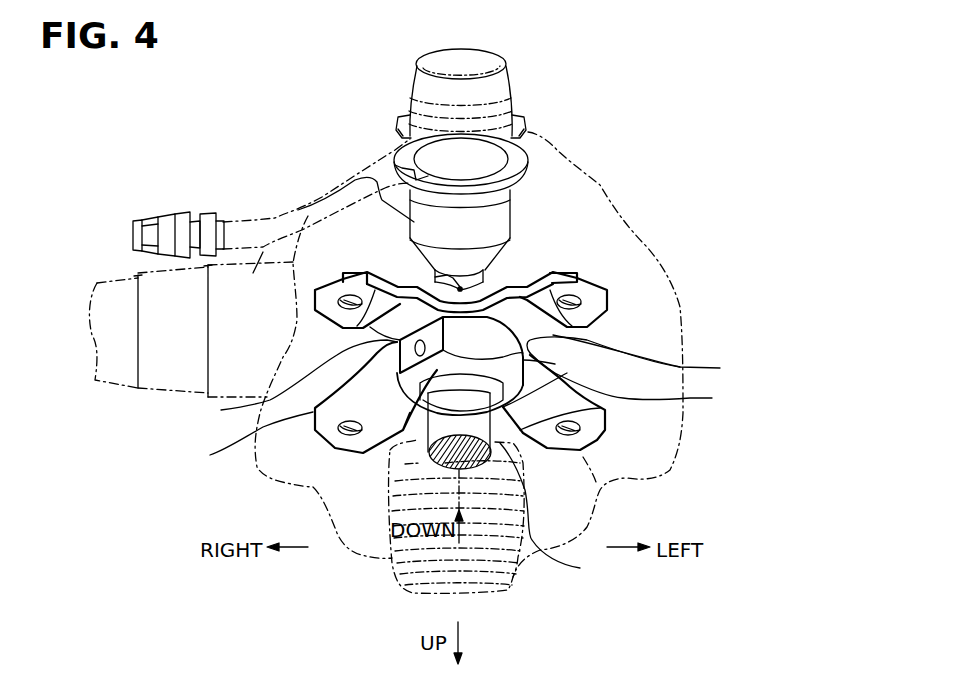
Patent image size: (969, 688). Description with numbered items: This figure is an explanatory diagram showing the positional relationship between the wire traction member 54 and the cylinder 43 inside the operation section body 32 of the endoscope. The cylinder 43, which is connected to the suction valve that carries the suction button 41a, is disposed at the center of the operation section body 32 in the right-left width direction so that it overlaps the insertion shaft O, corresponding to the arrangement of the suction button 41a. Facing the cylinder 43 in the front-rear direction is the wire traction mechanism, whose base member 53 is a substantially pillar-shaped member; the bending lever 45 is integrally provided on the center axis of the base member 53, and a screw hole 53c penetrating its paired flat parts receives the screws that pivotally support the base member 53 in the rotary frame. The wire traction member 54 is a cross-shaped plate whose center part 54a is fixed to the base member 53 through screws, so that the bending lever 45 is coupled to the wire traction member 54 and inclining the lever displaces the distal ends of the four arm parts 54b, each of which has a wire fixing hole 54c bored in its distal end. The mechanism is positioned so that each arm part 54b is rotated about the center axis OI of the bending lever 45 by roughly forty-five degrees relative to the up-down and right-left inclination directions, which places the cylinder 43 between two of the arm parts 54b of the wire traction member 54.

The operation section body 32 is at (580, 148).
The suction button 41a is at (480, 60).
The cylinder 43 is at (517, 153).
The insertion shaft O is at (460, 289).
The base member 53 is at (695, 398).
The screw hole 53c is at (270, 400).
The wire traction member 54 is at (636, 318).
The center part 54a is at (700, 368).
The arm parts 54b is at (330, 281).
The wire fixing hole 54c is at (357, 280).
The bending lever 45 is at (509, 486).
The center axis of the bending lever OI is at (467, 480).